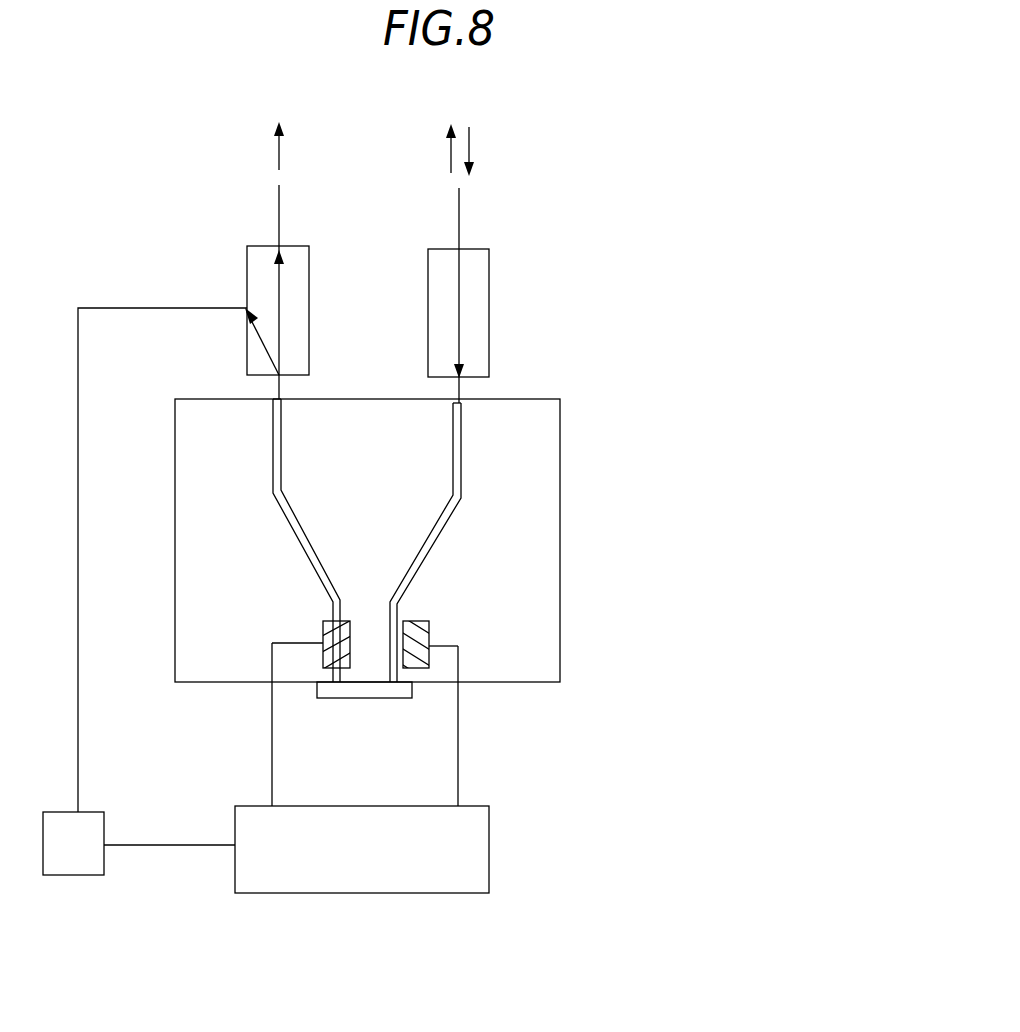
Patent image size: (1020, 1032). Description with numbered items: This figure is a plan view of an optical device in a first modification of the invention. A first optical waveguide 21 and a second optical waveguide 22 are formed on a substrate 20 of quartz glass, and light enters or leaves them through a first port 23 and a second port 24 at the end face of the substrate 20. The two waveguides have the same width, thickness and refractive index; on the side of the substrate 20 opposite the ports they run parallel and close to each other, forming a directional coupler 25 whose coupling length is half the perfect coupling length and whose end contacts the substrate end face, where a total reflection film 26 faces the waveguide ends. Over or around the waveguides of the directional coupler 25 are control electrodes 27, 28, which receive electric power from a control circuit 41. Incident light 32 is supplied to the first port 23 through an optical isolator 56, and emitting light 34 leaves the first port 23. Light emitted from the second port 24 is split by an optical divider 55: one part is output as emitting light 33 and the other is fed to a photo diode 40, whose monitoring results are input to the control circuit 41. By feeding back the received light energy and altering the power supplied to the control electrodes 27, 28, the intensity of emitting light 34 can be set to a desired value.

The substrate 20 is at (523, 400).
The first optical waveguide 21 is at (461, 487).
The second optical waveguide 22 is at (281, 488).
The first port 23 is at (463, 402).
The second port 24 is at (273, 398).
The directional coupler 25 is at (362, 672).
The total reflection film 26 is at (400, 700).
The control electrode 27 is at (426, 623).
The control electrode 28 is at (344, 620).
The incident light 32 is at (471, 143).
The emitting light 33 is at (276, 151).
The emitting light 34 is at (447, 153).
The photo diode 40 is at (92, 811).
The control circuit 41 is at (489, 865).
The optical divider 55 is at (309, 266).
The optical isolator 56 is at (489, 298).